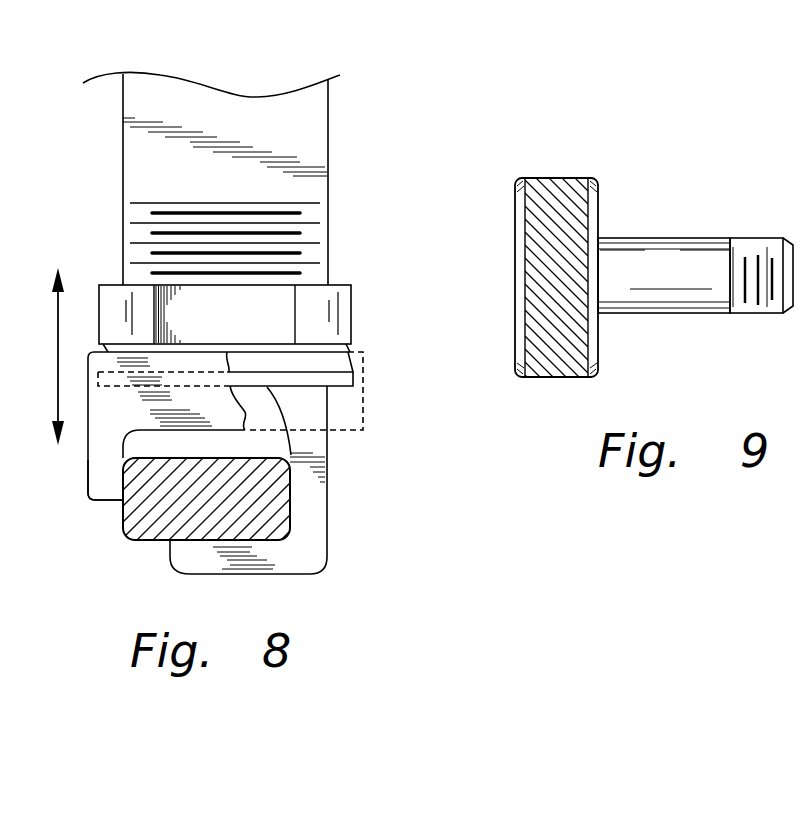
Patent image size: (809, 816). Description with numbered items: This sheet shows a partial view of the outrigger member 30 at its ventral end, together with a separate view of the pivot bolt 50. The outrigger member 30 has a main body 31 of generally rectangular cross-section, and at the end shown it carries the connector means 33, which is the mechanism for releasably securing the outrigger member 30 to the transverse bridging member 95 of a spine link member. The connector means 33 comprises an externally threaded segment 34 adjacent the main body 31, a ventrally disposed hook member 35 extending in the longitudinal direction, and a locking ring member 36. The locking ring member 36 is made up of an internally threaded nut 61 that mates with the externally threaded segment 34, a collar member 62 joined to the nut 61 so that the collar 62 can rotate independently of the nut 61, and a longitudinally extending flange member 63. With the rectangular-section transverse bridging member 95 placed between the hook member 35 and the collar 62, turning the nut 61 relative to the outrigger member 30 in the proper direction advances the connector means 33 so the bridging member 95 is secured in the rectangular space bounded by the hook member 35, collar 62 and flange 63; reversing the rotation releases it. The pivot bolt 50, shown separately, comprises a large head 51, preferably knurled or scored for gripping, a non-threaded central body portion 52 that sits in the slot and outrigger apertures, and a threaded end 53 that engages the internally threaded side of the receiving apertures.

In FIG. 8, the outrigger member 30 is at (362, 89).
In FIG. 8, the main body 31 is at (329, 137).
In FIG. 8, the externally threaded segment 34 is at (330, 243).
In FIG. 8, the internally threaded nut 61 is at (352, 303).
In FIG. 8, the locking ring member 36 is at (386, 329).
In FIG. 8, the connector means 33 is at (390, 516).
In FIG. 8, the hook member 35 is at (318, 572).
In FIG. 8, the transverse bridging member 95 is at (130, 540).
In FIG. 8, the collar member 62 is at (87, 375).
In FIG. 8, the flange member 63 is at (93, 498).
In FIG. 9, the pivot bolt 50 is at (688, 190).
In FIG. 9, the head 51 is at (560, 178).
In FIG. 9, the non-threaded central body portion 52 is at (653, 237).
In FIG. 9, the threaded end 53 is at (777, 237).